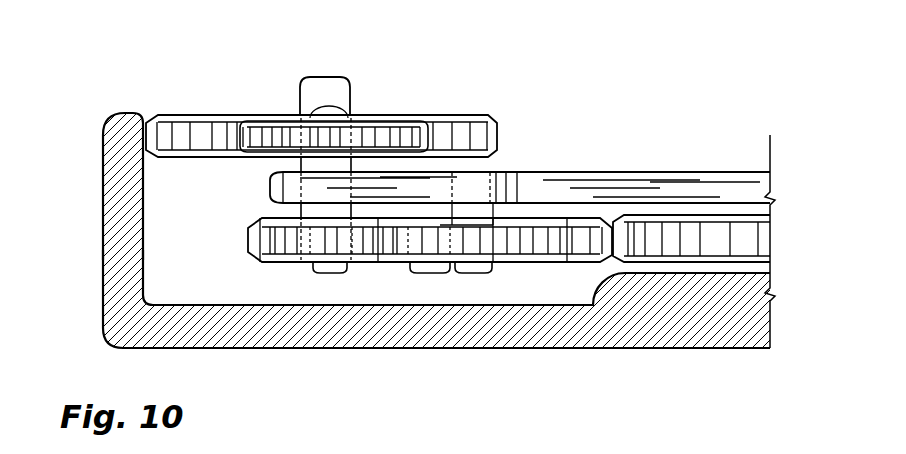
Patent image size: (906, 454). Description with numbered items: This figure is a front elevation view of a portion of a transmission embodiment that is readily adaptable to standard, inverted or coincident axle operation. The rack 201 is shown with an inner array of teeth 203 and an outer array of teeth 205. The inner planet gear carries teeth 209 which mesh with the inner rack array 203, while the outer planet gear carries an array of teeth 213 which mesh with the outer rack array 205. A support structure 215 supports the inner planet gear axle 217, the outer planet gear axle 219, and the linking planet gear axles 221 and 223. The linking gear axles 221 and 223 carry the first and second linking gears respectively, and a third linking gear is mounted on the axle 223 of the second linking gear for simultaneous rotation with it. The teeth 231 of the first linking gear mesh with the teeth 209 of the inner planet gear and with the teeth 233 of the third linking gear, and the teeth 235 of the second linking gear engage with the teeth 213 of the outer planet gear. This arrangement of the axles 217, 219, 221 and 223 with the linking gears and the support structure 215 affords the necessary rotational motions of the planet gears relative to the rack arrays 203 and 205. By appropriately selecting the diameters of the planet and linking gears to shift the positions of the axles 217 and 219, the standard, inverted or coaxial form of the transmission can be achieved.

The rack 201 is at (657, 320).
The inner array of teeth 203 is at (695, 237).
The outer array of teeth 205 is at (147, 117).
The teeth of the inner planet gear 209 is at (587, 243).
The teeth of the outer planet gear 213 is at (200, 133).
The support structure 215 is at (663, 185).
The inner planet gear axle 217 is at (427, 273).
The outer planet gear axle 219 is at (322, 90).
The linking planet gear axle 221 is at (473, 277).
The linking planet gear axle 223 is at (332, 268).
The teeth of the first linking gear 231 is at (495, 245).
The teeth of the third linking gear 233 is at (297, 245).
The teeth of the second linking gear 235 is at (272, 133).